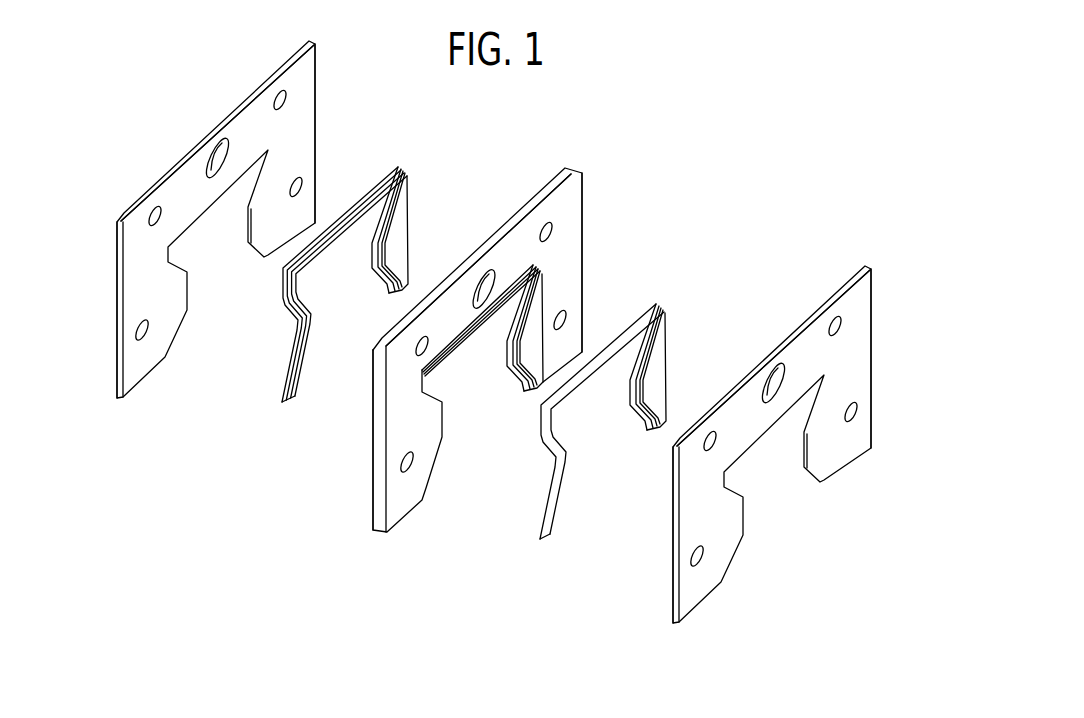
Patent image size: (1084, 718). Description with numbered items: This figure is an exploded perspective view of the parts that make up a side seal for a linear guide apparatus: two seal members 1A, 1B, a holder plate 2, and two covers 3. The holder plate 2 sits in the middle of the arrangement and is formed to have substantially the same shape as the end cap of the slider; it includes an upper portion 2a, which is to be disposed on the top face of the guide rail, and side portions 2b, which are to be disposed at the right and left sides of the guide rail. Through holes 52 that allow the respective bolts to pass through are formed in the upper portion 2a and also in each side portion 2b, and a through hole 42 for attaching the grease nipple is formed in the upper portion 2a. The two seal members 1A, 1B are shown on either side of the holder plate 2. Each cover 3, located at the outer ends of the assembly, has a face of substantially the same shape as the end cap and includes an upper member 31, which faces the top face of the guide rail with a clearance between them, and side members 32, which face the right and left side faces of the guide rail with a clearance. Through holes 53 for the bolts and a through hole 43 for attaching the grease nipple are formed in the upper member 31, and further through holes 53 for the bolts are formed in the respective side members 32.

The seal member 1A is at (261, 428).
The seal member 1B is at (528, 561).
The holder plate 2 is at (404, 534).
The upper portion 2a is at (455, 318).
The side portion 2b is at (567, 282).
The cover 3 is at (153, 393).
The upper member 31 is at (187, 187).
The side member 32 is at (290, 146).
The through hole 42 is at (490, 276).
The through hole 43 is at (215, 143).
The through hole 52 is at (552, 238).
The through hole 53 is at (153, 207).